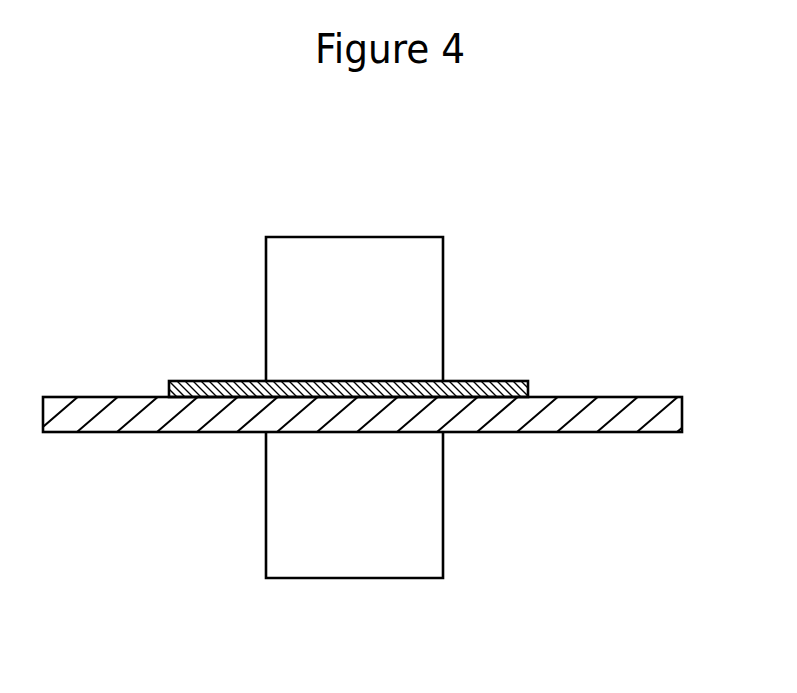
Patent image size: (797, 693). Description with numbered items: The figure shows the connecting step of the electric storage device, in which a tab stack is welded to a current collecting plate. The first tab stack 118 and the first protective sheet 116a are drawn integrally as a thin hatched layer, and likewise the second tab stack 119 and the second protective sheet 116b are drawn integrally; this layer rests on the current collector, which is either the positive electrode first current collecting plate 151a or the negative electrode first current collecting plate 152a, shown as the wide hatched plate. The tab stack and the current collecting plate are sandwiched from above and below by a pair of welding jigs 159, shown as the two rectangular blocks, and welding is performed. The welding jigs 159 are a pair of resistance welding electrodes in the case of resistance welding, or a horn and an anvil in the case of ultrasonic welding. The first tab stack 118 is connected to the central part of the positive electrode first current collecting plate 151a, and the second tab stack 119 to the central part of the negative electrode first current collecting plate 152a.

The welding jigs 159 is at (357, 252).
The first tab stack 118 is at (450, 342).
The second tab stack 119 is at (450, 342).
The first protective sheet 116a is at (450, 342).
The second protective sheet 116b is at (493, 380).
The positive electrode first current collecting plate 151a is at (360, 456).
The negative electrode first current collecting plate 152a is at (585, 423).